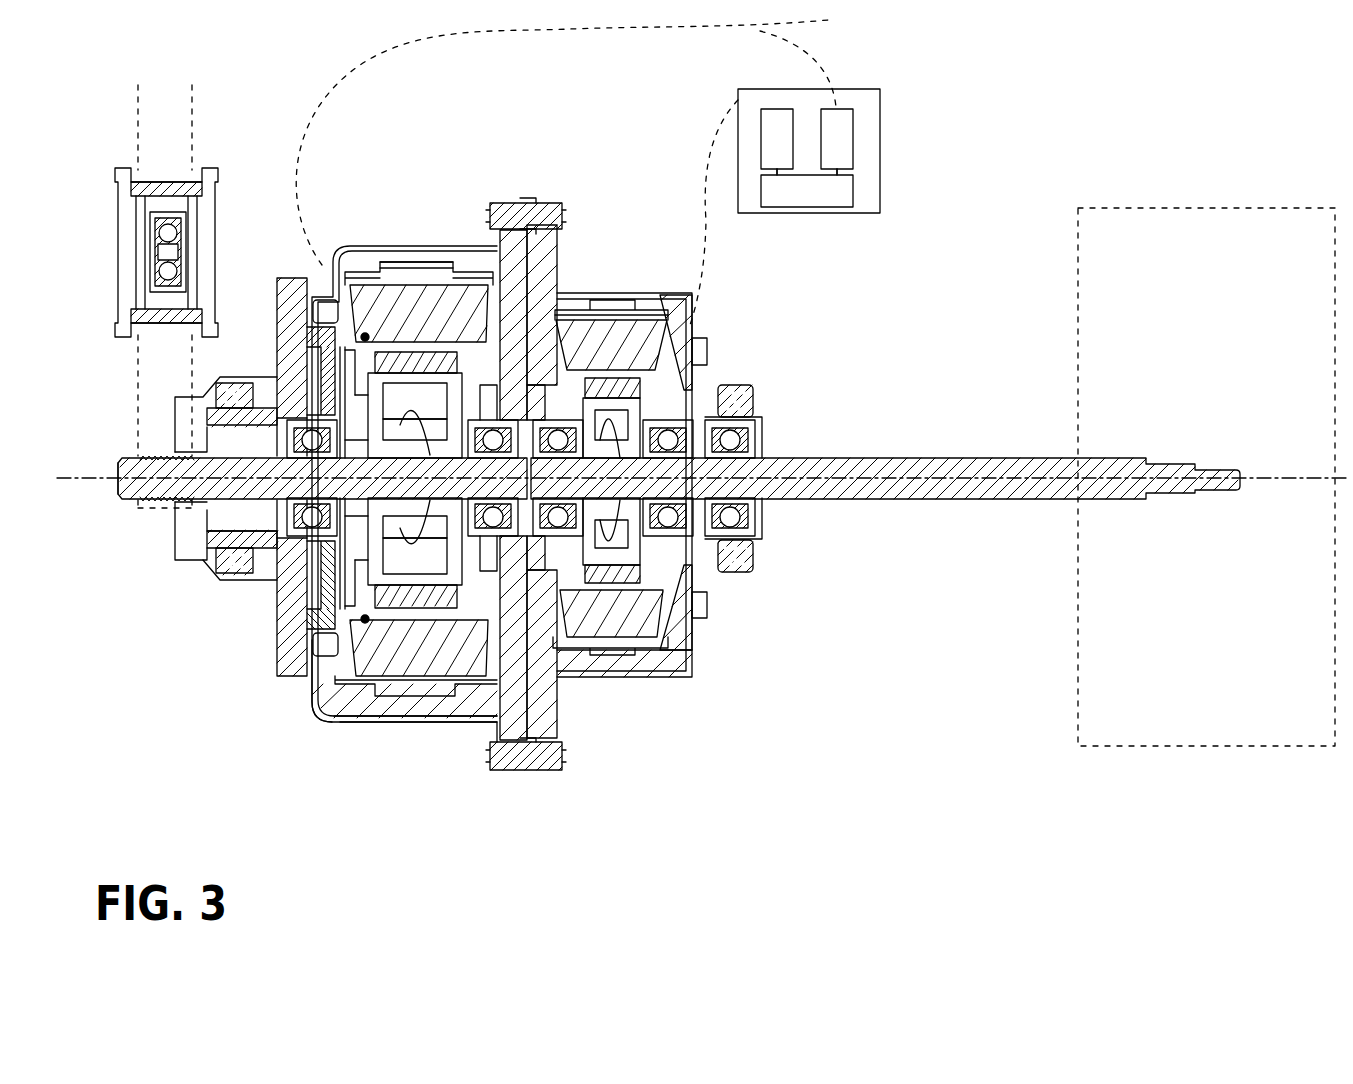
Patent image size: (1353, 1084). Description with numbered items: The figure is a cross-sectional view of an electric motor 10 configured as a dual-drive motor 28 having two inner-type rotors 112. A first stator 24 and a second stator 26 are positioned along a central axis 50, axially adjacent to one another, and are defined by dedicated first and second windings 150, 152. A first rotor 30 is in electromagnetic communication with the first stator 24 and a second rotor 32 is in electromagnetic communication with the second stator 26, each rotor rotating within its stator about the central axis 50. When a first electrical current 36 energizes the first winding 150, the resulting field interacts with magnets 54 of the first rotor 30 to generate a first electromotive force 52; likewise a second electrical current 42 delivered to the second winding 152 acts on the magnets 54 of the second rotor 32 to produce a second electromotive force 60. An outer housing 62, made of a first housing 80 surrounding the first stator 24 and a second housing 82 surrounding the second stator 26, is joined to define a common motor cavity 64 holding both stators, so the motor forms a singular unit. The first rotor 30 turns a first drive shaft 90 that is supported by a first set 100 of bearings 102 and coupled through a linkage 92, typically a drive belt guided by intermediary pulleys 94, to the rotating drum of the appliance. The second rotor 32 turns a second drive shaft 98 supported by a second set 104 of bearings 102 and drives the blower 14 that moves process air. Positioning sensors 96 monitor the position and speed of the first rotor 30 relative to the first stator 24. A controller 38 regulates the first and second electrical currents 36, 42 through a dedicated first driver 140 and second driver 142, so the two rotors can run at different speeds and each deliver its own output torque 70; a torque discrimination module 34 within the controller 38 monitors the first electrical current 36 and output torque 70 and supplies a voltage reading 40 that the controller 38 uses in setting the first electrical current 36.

The electric motor 10 is at (562, 122).
The blower 14 is at (1169, 203).
The first stator 24 is at (412, 312).
The second stator 26 is at (610, 337).
The dual-drive motor 28 is at (392, 744).
The first rotor 30 is at (345, 583).
The second rotor 32 is at (665, 553).
The torque discrimination module 34 is at (788, 200).
The first electrical current 36 is at (580, 134).
The controller 38 is at (864, 222).
The voltage reading 40 is at (780, 174).
The second electrical current 42 is at (713, 233).
The central axis 50 is at (75, 480).
The first electromotive force 52 is at (440, 507).
The magnets 54 is at (434, 390).
The second electromotive force 60 is at (612, 598).
The outer housing 62 is at (355, 737).
The common motor cavity 64 is at (358, 375).
The output torque 70 is at (378, 553).
The first housing 80 is at (345, 707).
The second housing 82 is at (668, 660).
The first drive shaft 90 is at (121, 500).
The linkage 92 is at (136, 157).
The intermediary pulleys 94 is at (136, 218).
The positioning sensors 96 is at (362, 622).
The second drive shaft 98 is at (917, 487).
The first set of bearings 100 is at (295, 553).
The bearings 102 is at (553, 415).
The second set of bearings 104 is at (670, 440).
The inner-type rotors 112 is at (352, 437).
The first driver 140 is at (782, 112).
The second driver 142 is at (842, 138).
The first winding 150 is at (392, 274).
The second winding 152 is at (646, 316).